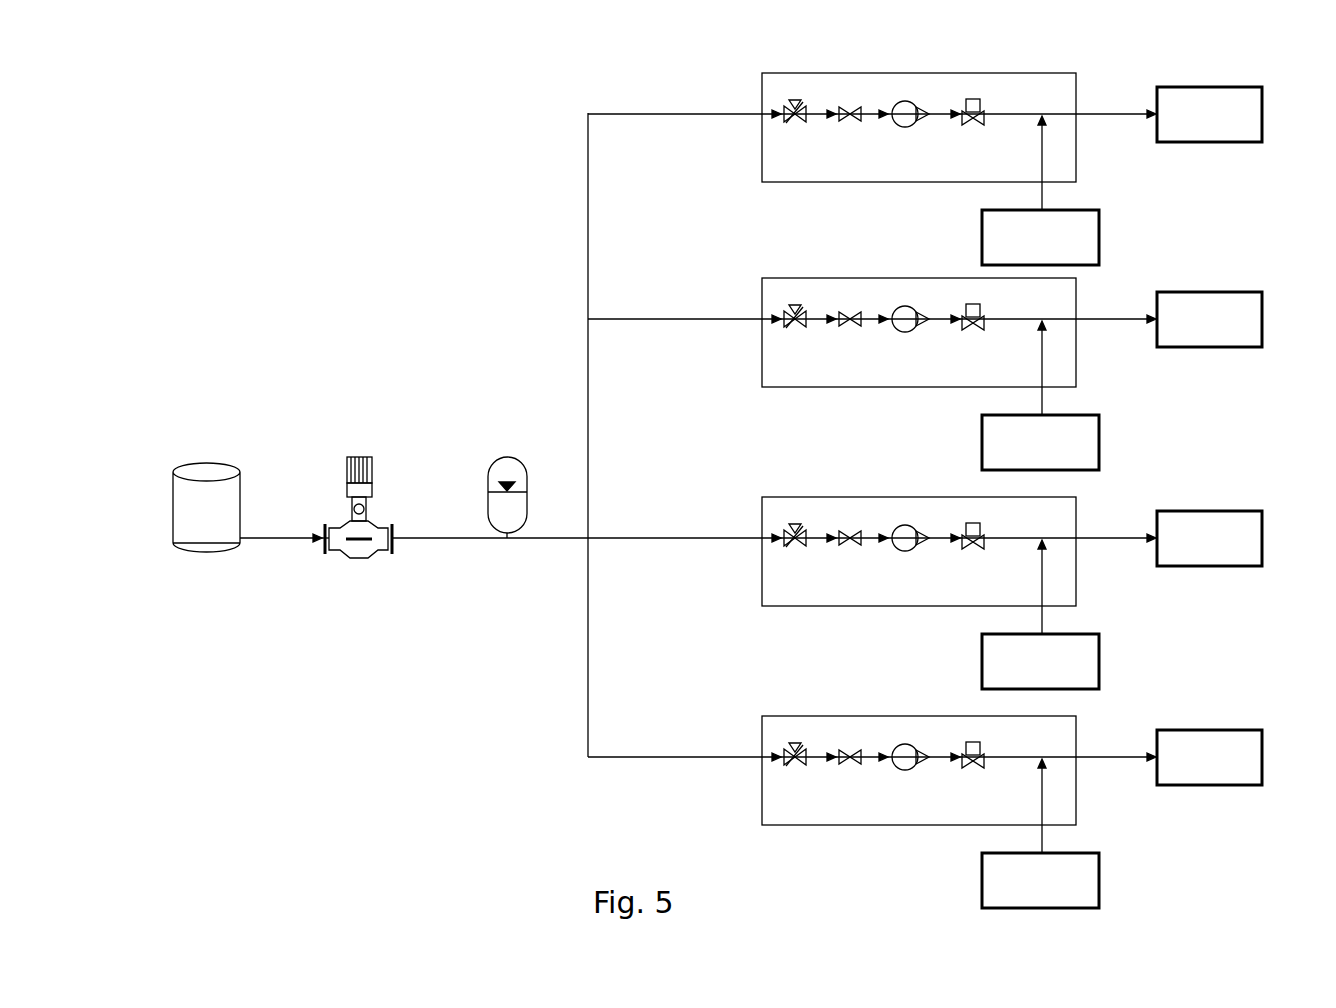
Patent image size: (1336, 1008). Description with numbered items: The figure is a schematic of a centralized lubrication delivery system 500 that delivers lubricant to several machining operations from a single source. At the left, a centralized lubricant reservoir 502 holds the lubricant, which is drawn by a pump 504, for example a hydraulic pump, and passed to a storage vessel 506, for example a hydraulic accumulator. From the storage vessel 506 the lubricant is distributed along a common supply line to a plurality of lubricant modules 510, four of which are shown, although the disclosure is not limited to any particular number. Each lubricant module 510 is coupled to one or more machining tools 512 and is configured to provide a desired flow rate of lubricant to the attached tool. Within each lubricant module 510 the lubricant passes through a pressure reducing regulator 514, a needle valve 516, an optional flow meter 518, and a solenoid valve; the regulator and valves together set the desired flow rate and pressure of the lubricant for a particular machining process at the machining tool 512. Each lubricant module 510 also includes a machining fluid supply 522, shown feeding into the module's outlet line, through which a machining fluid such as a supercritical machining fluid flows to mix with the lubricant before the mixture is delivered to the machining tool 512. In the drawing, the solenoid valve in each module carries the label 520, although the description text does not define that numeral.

The centralized lubrication delivery system 500 is at (354, 248).
The centralized lubricant reservoir 502 is at (176, 462).
The pump 504 is at (343, 462).
The storage vessel 506 is at (500, 458).
The lubricant module 510 is at (758, 82).
The machining tool 512 is at (1169, 436).
The pressure reducing regulator 514 is at (793, 120).
The needle valve 516 is at (835, 102).
The flow meter 518 is at (903, 105).
The solenoid valve 520 is at (965, 100).
The machining fluid supply 522 is at (1040, 512).